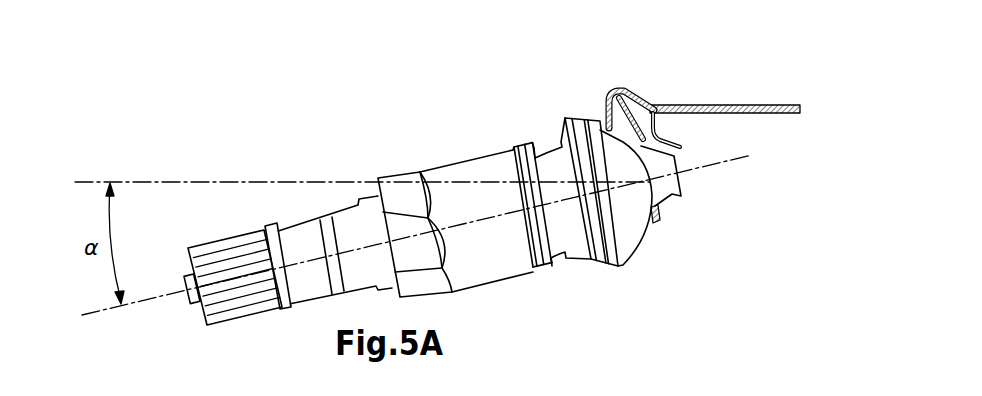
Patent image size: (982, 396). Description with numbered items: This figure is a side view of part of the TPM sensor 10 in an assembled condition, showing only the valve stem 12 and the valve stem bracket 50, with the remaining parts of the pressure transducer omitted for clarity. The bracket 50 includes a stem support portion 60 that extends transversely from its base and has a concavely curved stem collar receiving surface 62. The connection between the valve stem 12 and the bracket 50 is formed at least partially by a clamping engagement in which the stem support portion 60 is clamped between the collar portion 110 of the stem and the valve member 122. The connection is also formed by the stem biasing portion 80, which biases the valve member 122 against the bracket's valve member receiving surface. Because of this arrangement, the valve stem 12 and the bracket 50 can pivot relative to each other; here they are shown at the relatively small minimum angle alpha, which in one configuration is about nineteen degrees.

The TPM sensor 10 is at (296, 130).
The valve stem 12 is at (343, 232).
The valve stem bracket 50 is at (723, 108).
The stem support portion 60 is at (660, 220).
The stem collar receiving surface 62 is at (637, 93).
The stem biasing portion 80 is at (684, 148).
The collar portion 110 is at (633, 218).
The valve member 122 is at (673, 193).